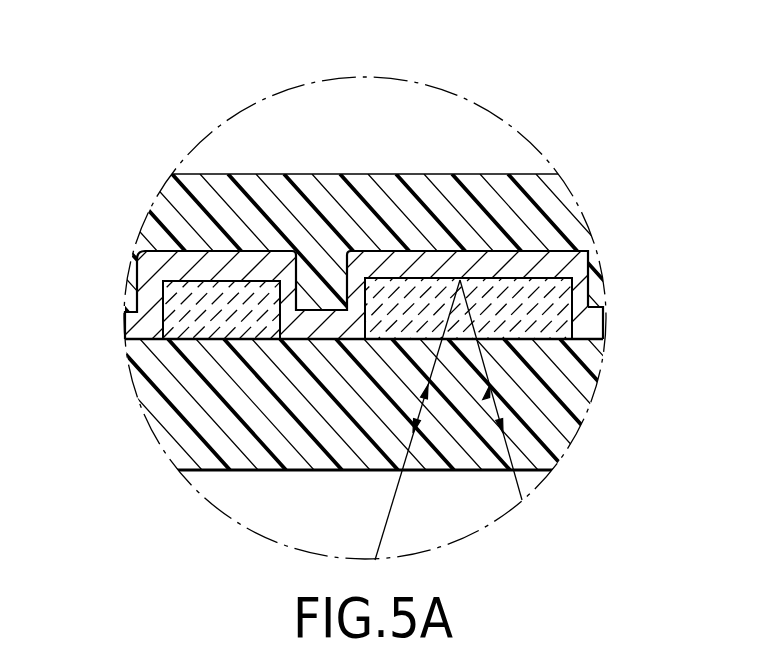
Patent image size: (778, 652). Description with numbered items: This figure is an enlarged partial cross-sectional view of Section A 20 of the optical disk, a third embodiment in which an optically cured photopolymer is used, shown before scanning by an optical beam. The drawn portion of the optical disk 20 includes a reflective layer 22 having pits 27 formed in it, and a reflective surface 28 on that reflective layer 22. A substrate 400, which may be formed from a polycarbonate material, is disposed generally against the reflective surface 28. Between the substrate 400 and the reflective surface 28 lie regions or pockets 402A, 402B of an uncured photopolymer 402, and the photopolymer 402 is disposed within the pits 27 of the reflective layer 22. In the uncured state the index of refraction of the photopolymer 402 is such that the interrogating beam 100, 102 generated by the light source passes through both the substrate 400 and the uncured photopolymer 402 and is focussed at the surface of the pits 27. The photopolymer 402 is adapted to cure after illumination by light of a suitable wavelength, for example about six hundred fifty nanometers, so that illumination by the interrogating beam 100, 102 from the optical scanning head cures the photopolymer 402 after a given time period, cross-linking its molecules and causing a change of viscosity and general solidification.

The section A is at (441, 90).
The optical disk 20 is at (485, 174).
The reflective layer 22 is at (603, 307).
The pits 27 is at (491, 281).
The reflective surface 28 is at (600, 356).
The substrate 400 is at (583, 418).
The uncured photopolymer 402 is at (545, 277).
The region or pocket of uncured photopolymer 402A is at (163, 340).
The region or pocket of uncured photopolymer 402B is at (398, 300).
The interrogating beam 100 is at (553, 473).
The thickness dimension line 102 is at (522, 500).